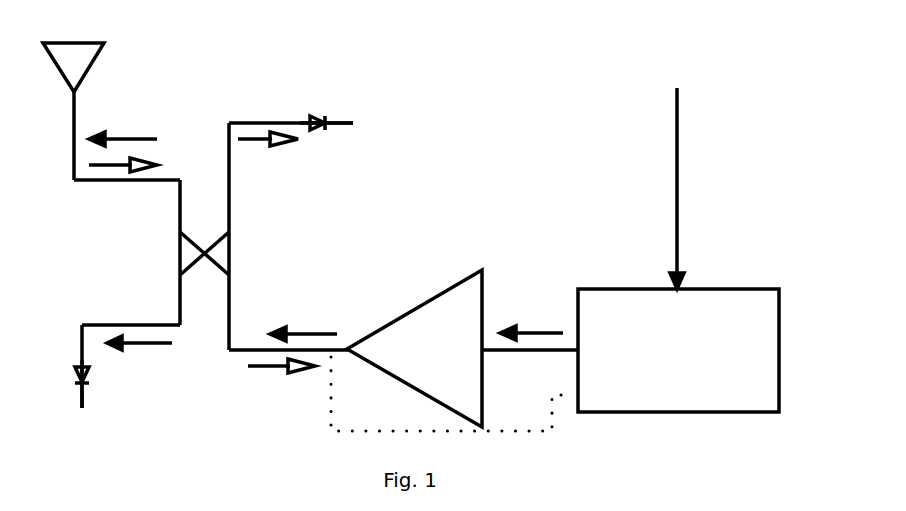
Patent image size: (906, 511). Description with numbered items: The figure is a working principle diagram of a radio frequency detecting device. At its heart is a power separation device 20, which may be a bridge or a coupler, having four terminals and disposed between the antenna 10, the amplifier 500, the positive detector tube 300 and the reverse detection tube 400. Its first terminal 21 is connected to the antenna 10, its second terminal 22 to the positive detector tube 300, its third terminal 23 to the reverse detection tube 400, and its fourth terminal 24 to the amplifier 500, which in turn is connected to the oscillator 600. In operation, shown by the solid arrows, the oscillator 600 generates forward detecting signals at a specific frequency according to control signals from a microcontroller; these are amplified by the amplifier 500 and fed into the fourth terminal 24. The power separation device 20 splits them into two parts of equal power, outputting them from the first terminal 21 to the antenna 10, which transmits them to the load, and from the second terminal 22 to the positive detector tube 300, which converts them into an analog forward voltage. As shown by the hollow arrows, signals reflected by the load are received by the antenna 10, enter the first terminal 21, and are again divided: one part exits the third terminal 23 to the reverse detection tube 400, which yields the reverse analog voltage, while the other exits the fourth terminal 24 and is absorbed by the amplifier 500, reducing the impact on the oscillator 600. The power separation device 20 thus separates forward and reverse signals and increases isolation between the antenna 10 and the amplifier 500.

The antenna 10 is at (90, 63).
The power separation device 20 is at (271, 241).
The first terminal 21 is at (180, 232).
The second terminal 22 is at (180, 275).
The third terminal 23 is at (229, 232).
The fourth terminal 24 is at (229, 275).
The positive detector tube 300 is at (87, 375).
The reverse detection tube 400 is at (317, 112).
The amplifier 500 is at (458, 297).
The oscillator 600 is at (647, 297).